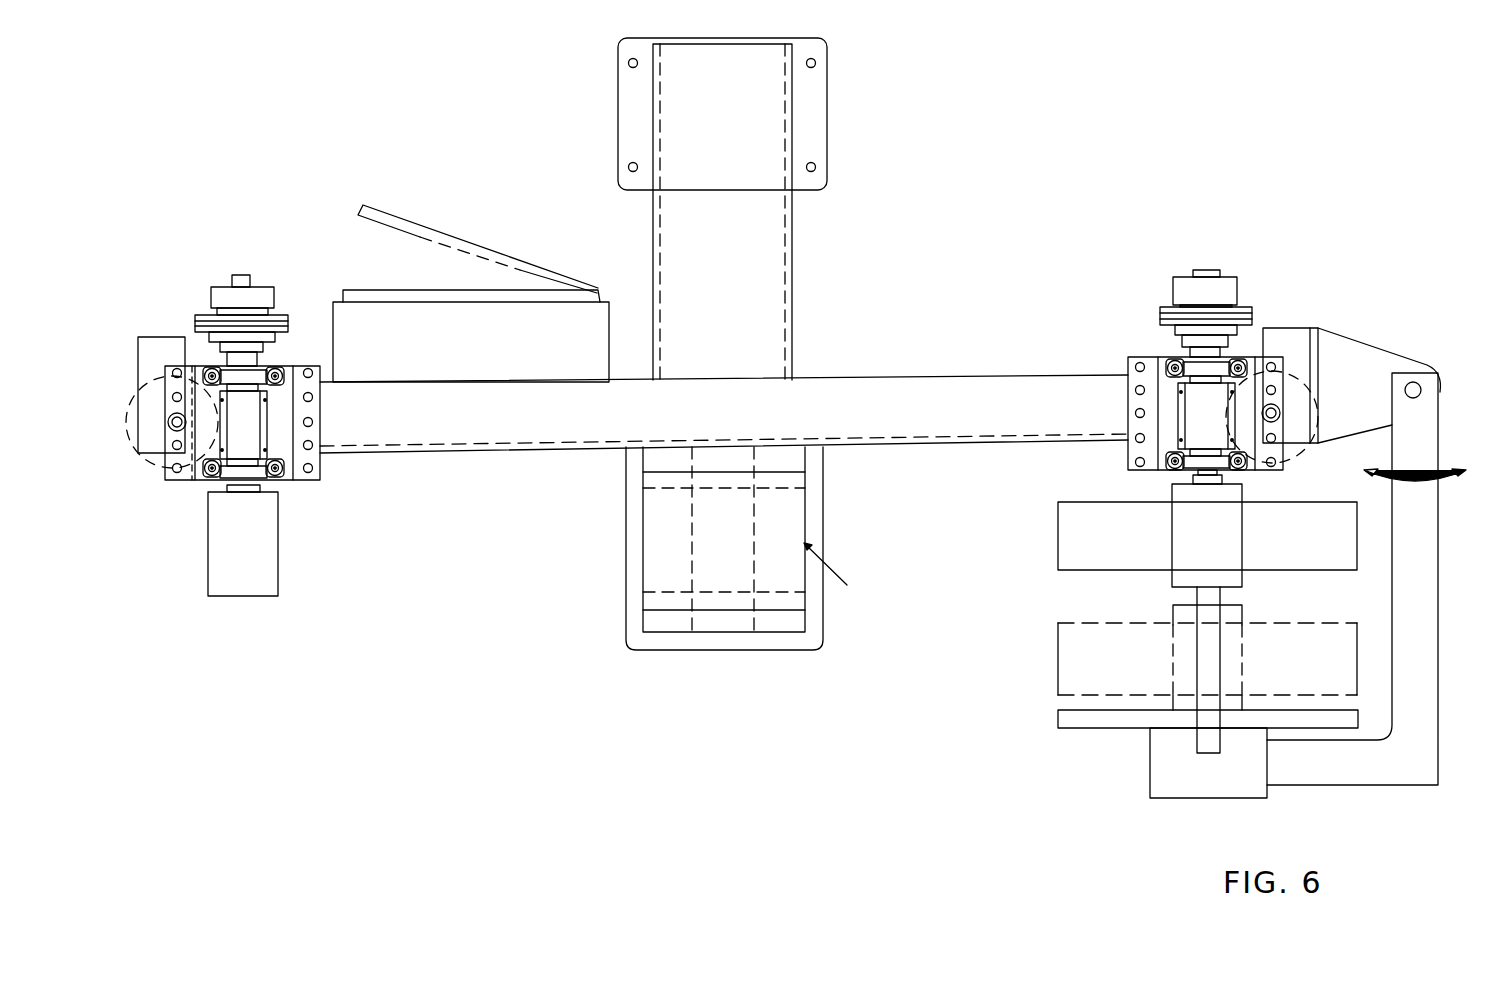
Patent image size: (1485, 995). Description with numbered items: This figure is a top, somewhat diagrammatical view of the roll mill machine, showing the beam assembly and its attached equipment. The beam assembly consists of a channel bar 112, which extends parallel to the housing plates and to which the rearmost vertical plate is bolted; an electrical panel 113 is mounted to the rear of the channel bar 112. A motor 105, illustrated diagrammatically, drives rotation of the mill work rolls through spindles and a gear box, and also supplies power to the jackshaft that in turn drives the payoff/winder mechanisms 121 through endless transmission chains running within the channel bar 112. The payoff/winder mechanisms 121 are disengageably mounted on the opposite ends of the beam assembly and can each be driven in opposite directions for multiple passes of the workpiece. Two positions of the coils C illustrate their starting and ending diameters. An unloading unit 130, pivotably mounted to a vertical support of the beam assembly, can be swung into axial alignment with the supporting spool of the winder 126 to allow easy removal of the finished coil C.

The motor 105 is at (757, 203).
The channel bar 112 is at (497, 437).
The electrical panel 113 is at (343, 290).
The payoff/winder mechanism 121 is at (322, 402).
The winder 126 is at (270, 550).
The unloading unit 130 is at (1352, 777).
The coil C is at (1058, 532).